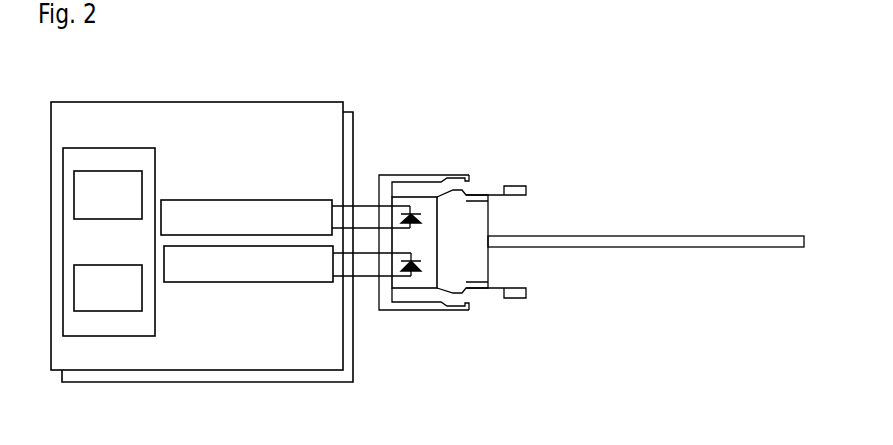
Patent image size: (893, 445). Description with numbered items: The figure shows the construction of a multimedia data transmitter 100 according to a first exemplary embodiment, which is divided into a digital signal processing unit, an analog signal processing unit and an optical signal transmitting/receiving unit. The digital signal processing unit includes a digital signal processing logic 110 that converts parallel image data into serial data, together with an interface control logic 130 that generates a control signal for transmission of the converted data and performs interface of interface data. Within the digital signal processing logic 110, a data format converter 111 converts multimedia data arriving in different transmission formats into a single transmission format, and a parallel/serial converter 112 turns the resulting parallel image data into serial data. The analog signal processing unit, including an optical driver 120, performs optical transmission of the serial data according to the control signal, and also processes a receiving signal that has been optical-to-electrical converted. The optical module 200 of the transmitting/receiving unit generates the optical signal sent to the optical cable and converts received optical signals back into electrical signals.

The multimedia data transmitter 100 is at (66, 103).
The digital signal processing logic 110 is at (78, 378).
The data format converter 111 is at (118, 173).
The parallel/serial converter 112 is at (117, 300).
The optical driver 120 is at (256, 202).
The interface control logic 130 is at (257, 278).
The optical module 200 is at (425, 175).